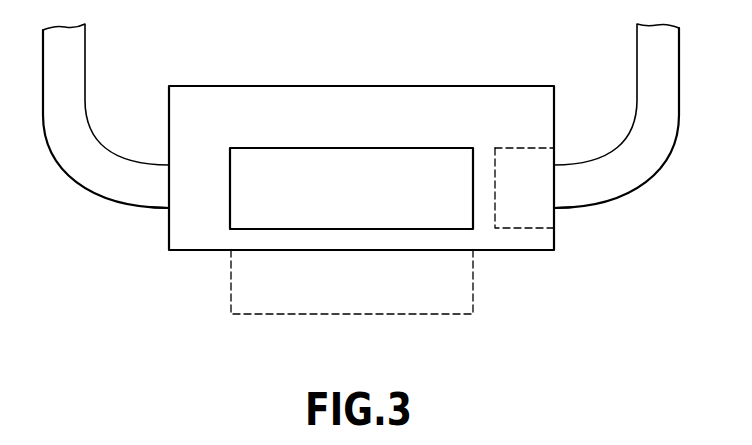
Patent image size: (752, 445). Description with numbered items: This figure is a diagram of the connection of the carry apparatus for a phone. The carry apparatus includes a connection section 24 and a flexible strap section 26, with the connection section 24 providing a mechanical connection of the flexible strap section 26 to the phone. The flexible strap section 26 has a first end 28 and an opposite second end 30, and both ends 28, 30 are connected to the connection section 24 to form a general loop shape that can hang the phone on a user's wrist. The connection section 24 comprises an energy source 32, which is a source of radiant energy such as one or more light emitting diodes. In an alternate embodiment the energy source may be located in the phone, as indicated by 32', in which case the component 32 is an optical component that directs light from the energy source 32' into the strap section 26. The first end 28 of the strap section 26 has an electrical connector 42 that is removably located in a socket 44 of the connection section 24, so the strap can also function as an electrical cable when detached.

The connection section 24 is at (335, 84).
The flexible strap section 26 is at (63, 165).
The first end 28 is at (563, 208).
The second end 30 is at (160, 215).
The energy source 32 is at (324, 225).
The energy source located in the phone 32' is at (352, 309).
The electrical connector 42 is at (513, 228).
The socket 44 is at (507, 148).